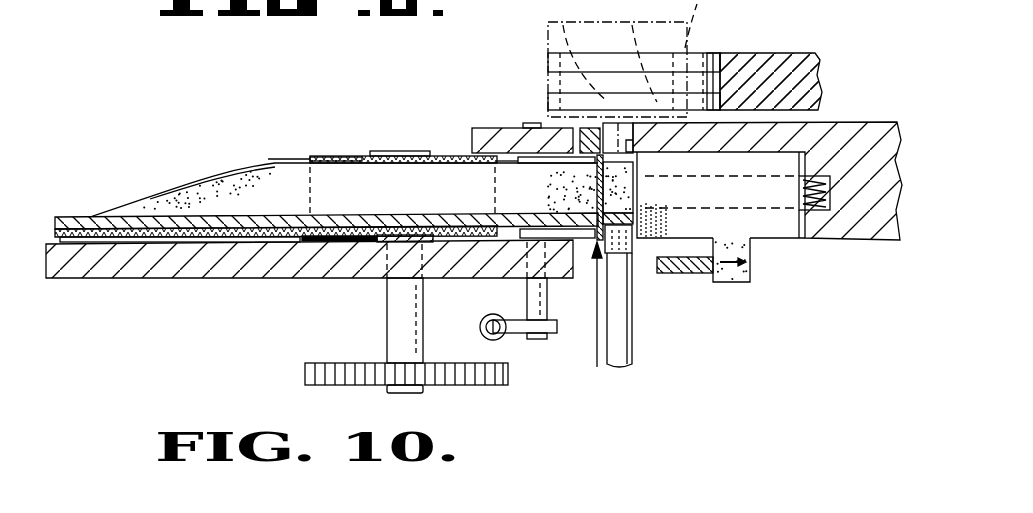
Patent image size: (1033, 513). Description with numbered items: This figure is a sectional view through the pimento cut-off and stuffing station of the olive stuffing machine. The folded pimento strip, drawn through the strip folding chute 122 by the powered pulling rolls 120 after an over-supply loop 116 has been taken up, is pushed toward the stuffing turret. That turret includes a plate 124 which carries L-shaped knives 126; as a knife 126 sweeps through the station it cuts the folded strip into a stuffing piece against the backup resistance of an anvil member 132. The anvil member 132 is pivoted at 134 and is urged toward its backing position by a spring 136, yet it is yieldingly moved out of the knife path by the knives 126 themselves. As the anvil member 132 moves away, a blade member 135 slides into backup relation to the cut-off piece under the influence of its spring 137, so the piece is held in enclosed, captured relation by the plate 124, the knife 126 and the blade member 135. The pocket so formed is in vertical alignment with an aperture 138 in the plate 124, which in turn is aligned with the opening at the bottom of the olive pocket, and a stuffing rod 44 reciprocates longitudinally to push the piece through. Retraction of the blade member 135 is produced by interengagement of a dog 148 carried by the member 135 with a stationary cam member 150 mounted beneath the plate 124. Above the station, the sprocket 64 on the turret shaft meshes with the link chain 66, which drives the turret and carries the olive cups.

The stuffing rod 44 is at (633, 357).
The sprocket 64 is at (787, 58).
The link chain 66 is at (713, 53).
The over-supply loop 116 is at (603, 190).
The pulling rolls 120 is at (447, 156).
The strip folding chute 122 is at (271, 162).
The plate 124 is at (847, 123).
The L-shaped knife 126 is at (586, 304).
The anvil member 132 is at (579, 238).
The pivot 134 is at (532, 123).
The blade member 135 is at (648, 240).
The spring 136 is at (487, 320).
The spring 137 is at (812, 225).
The aperture 138 is at (627, 143).
The dog 148 is at (750, 272).
The stationary cam member 150 is at (697, 273).